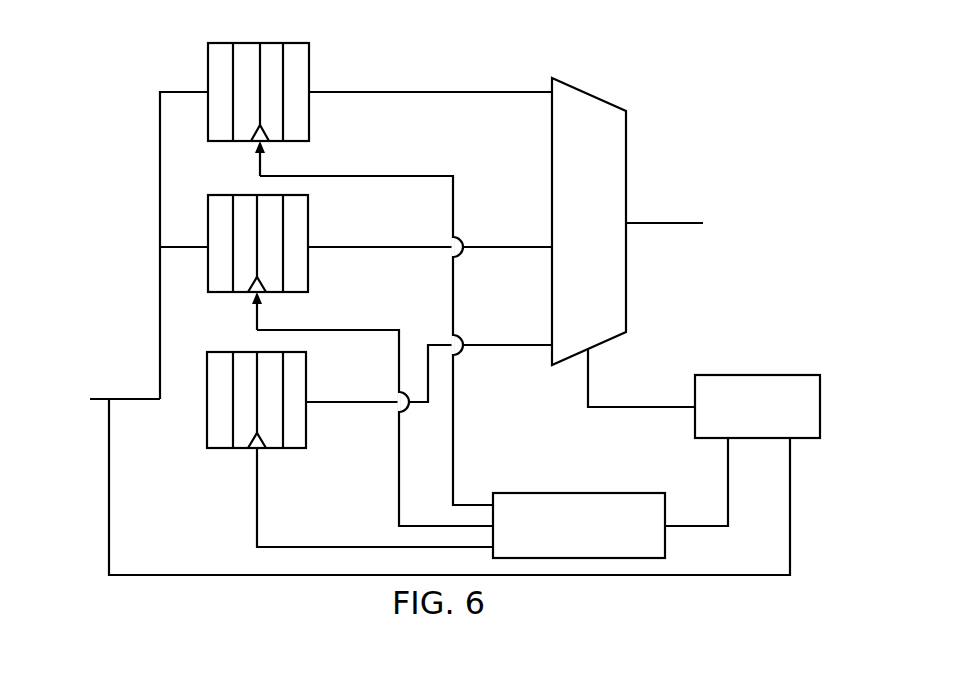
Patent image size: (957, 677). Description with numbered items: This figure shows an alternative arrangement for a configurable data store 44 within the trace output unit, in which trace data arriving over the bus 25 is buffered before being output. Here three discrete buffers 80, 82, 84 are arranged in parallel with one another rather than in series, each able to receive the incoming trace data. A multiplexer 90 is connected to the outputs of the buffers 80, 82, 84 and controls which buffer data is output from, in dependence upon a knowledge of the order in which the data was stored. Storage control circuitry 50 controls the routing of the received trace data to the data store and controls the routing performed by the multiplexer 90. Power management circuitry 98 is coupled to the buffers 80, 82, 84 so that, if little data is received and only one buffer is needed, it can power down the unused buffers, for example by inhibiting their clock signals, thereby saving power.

The data store 44 is at (480, 61).
The bus 25 is at (98, 399).
The buffer 80 is at (309, 75).
The buffer 82 is at (308, 228).
The buffer 84 is at (306, 378).
The multiplexer 90 is at (626, 152).
The storage control circuitry 50 is at (757, 375).
The power management circuitry 98 is at (580, 493).